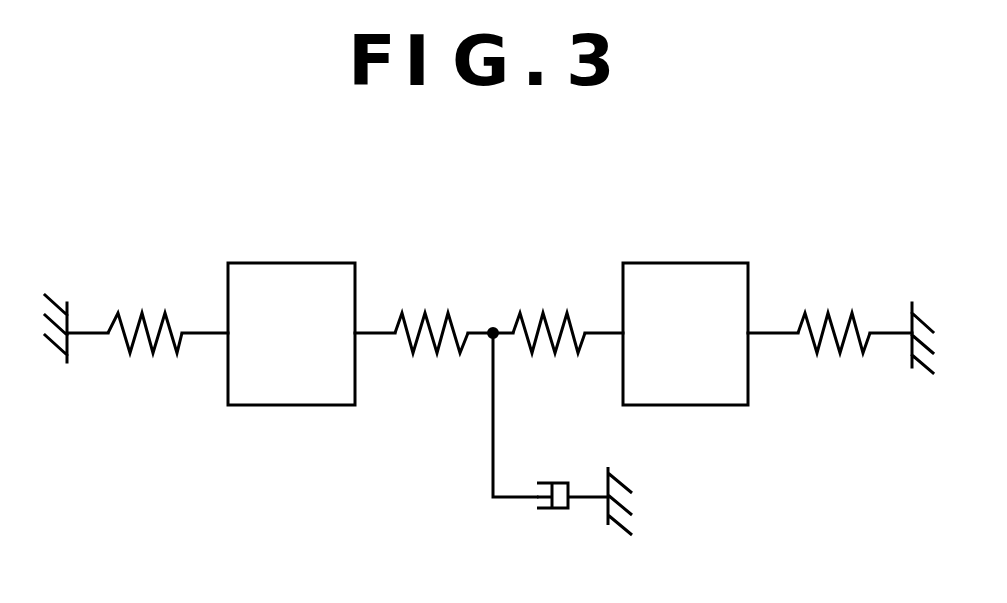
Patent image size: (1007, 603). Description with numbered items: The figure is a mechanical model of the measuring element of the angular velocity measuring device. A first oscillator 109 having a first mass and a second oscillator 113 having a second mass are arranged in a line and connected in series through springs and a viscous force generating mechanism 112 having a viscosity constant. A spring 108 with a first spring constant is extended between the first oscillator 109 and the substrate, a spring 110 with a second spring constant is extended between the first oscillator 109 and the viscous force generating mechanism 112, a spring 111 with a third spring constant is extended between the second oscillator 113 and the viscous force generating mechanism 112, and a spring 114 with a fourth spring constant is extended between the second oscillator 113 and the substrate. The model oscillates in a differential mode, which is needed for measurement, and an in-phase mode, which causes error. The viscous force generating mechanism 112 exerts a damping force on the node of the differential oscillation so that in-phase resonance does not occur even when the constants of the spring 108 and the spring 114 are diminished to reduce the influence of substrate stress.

The spring 108 is at (137, 338).
The first oscillator 109 is at (293, 405).
The spring 110 is at (420, 342).
The spring 111 is at (538, 342).
The viscous force generating mechanism 112 is at (555, 508).
The second oscillator 113 is at (686, 405).
The spring 114 is at (822, 342).